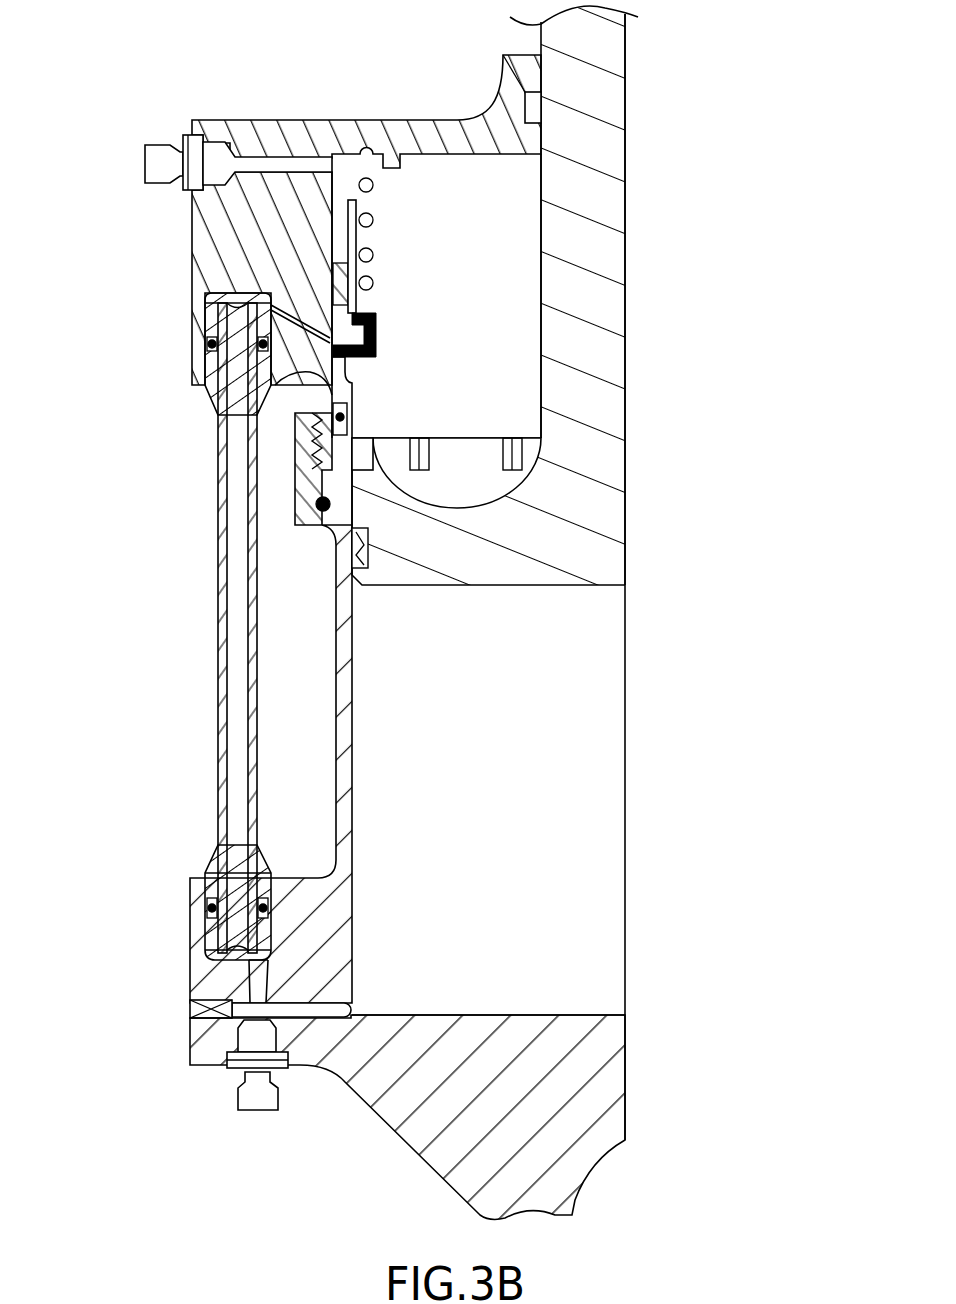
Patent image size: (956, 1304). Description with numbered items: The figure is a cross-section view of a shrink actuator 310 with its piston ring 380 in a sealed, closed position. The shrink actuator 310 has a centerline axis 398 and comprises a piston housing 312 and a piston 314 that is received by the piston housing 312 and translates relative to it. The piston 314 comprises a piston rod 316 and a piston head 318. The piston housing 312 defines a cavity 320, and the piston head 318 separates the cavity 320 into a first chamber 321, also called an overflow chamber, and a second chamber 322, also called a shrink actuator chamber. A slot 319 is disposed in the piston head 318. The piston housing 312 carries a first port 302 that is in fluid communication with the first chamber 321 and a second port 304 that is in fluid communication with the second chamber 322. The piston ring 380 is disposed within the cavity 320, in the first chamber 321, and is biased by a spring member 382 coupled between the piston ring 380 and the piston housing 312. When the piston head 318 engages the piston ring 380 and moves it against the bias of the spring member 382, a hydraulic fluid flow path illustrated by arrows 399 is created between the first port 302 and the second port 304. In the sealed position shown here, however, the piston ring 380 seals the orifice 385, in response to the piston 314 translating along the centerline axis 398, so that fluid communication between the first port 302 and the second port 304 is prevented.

The shrink actuator 310 is at (695, 60).
The first port 302 is at (152, 143).
The second port 304 is at (240, 1100).
The piston housing 312 is at (410, 1098).
The piston 314 is at (625, 250).
The piston rod 316 is at (610, 145).
The piston head 318 is at (604, 560).
The slot 319 is at (362, 455).
The cavity 320 is at (515, 693).
The first chamber 321 is at (507, 198).
The second chamber 322 is at (515, 823).
The piston ring 380 is at (370, 303).
The spring member 382 is at (373, 221).
The orifice 385 is at (318, 338).
The centerline axis 398 is at (626, 648).
The arrows 399 is at (240, 612).